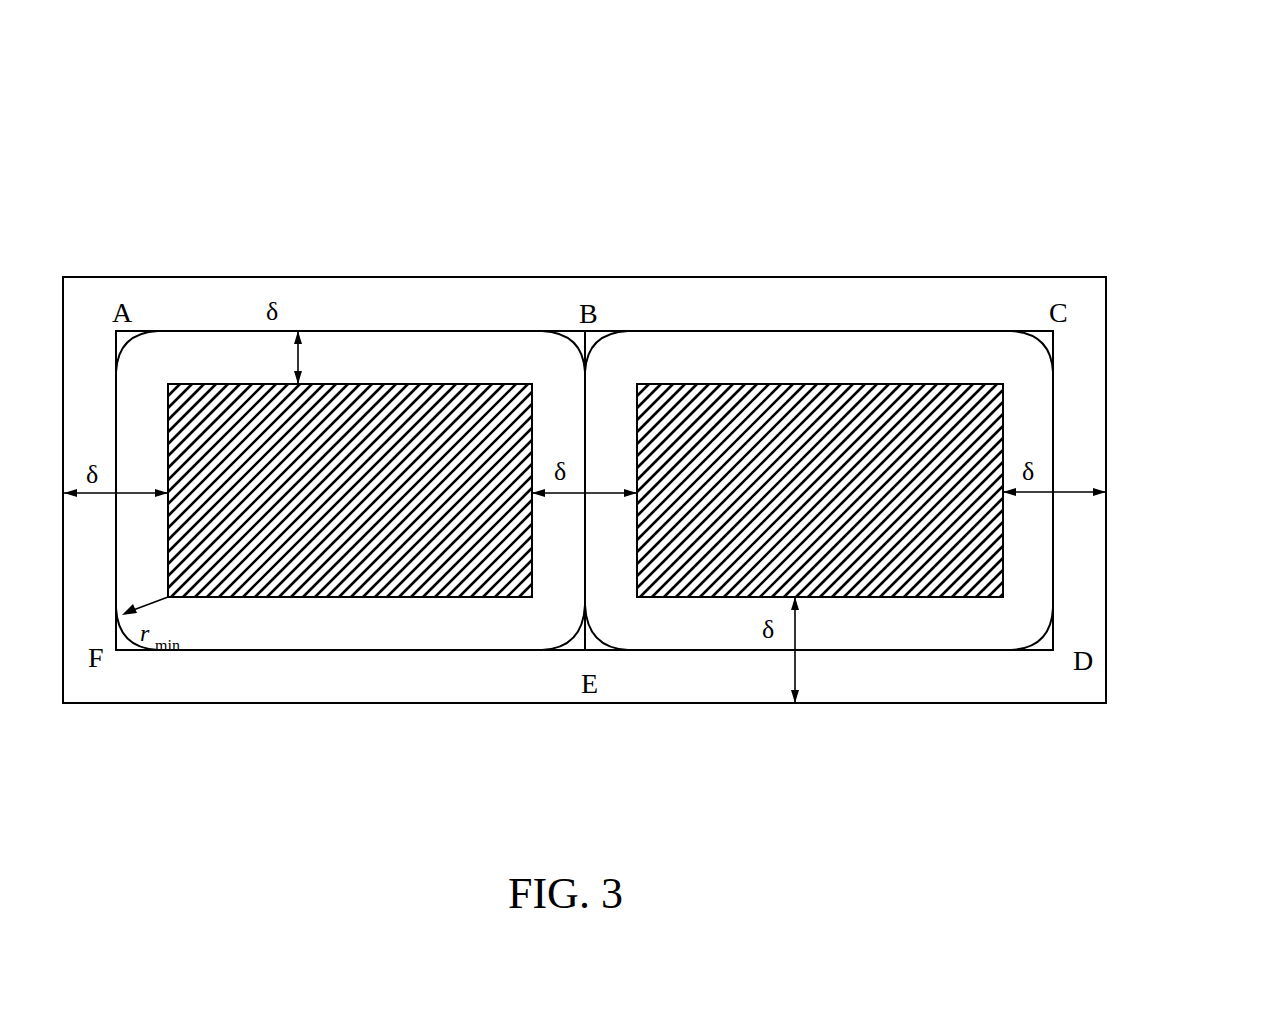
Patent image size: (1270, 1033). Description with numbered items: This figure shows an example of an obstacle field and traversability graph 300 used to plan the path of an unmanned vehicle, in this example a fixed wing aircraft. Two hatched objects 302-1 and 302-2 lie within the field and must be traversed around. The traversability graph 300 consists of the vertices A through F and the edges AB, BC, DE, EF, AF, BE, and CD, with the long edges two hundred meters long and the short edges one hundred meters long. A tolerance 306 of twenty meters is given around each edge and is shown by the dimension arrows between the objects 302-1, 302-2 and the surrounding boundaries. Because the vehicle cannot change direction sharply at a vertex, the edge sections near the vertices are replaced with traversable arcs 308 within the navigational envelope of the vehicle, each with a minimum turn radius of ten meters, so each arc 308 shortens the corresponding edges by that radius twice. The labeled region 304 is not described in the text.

The traversability graph 300 is at (1168, 170).
The object 302-1 is at (386, 392).
The object 302-2 is at (870, 405).
The spacing region around features 304 is at (213, 340).
The tolerance 306 is at (298, 340).
The arc 308 is at (554, 338).